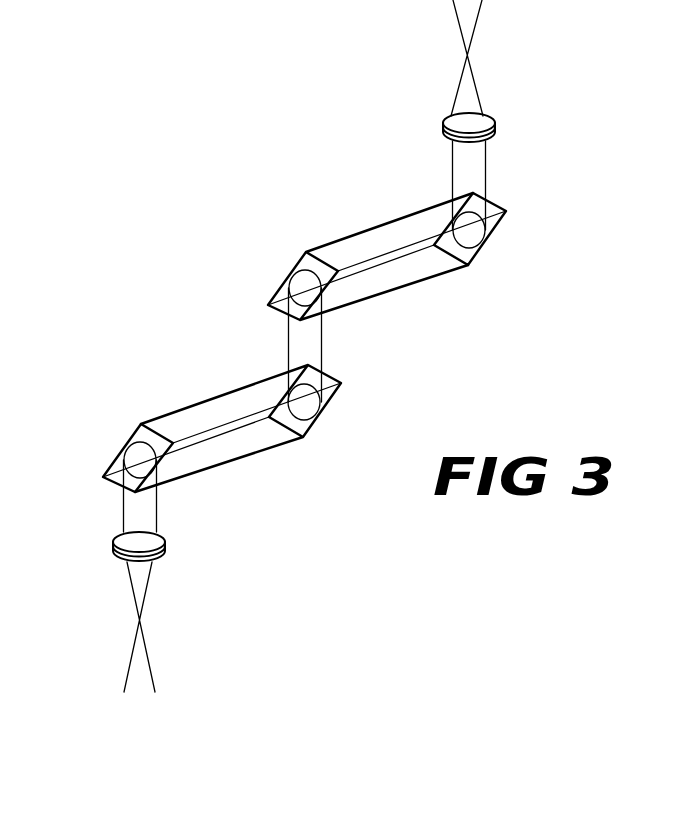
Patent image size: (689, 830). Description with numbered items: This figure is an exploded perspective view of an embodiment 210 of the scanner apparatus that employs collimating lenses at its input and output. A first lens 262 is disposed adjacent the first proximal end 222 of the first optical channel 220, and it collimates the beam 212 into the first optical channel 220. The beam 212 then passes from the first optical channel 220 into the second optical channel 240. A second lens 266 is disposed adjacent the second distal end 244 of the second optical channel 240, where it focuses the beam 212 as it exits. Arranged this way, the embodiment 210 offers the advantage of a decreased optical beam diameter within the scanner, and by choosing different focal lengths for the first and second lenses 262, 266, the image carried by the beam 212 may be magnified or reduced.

The embodiment 210 is at (308, 108).
The beam 212 is at (477, 24).
The first optical channel 220 is at (383, 228).
The first proximal end 222 is at (483, 240).
The second optical channel 240 is at (205, 405).
The second distal end 244 is at (127, 443).
The first lens 262 is at (490, 112).
The second lens 266 is at (118, 537).